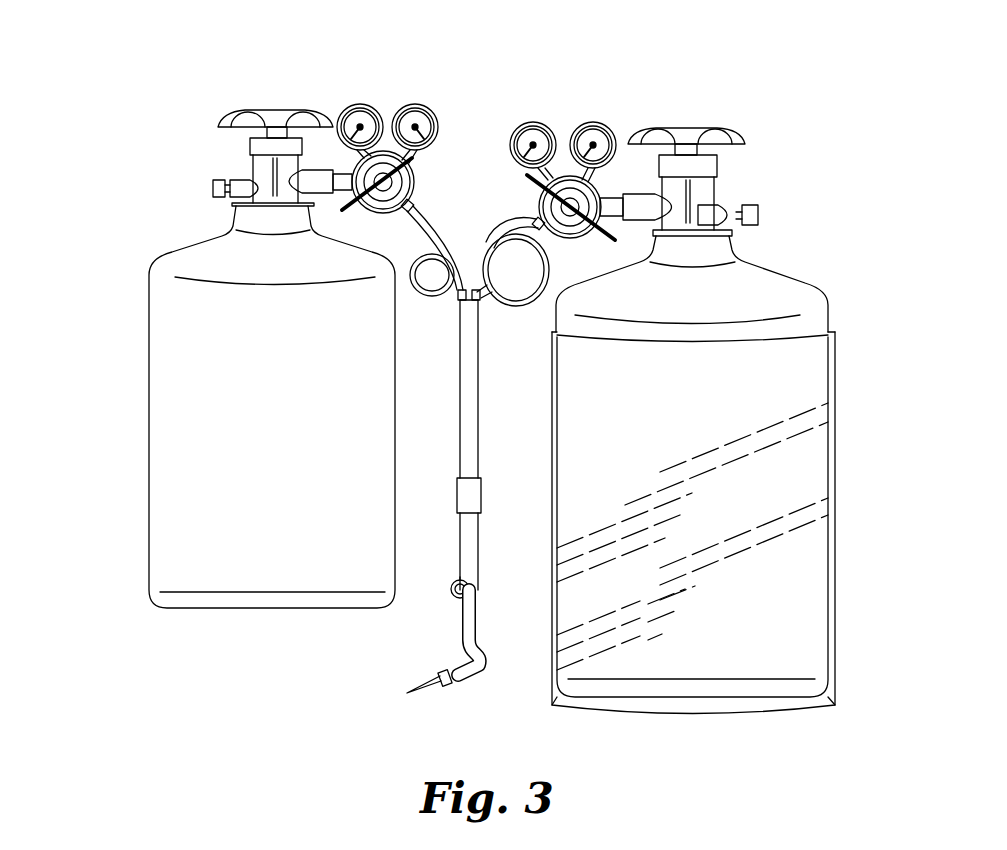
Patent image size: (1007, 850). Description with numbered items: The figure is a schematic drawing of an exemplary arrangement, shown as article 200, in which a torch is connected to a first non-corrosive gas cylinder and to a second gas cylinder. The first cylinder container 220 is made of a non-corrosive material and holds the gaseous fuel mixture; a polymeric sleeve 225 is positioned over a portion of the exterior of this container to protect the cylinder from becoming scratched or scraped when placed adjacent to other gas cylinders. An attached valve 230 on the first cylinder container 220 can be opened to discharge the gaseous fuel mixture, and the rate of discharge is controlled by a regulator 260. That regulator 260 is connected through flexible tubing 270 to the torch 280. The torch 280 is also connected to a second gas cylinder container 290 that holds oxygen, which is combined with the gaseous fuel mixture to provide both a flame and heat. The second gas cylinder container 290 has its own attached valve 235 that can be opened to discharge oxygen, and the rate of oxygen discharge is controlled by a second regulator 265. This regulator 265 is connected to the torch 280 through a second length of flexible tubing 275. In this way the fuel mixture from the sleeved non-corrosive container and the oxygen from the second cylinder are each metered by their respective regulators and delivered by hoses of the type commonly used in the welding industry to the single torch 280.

The article 200 is at (738, 48).
The first cylinder container 220 is at (748, 270).
The polymeric sleeve 225 is at (695, 716).
The valve 230 is at (688, 130).
The valve 235 is at (273, 118).
The regulator 260 is at (590, 118).
The regulator 265 is at (414, 105).
The flexible tubing 270 is at (505, 308).
The flexible tubing 275 is at (433, 300).
The torch 280 is at (462, 674).
The second gas cylinder container 290 is at (253, 608).